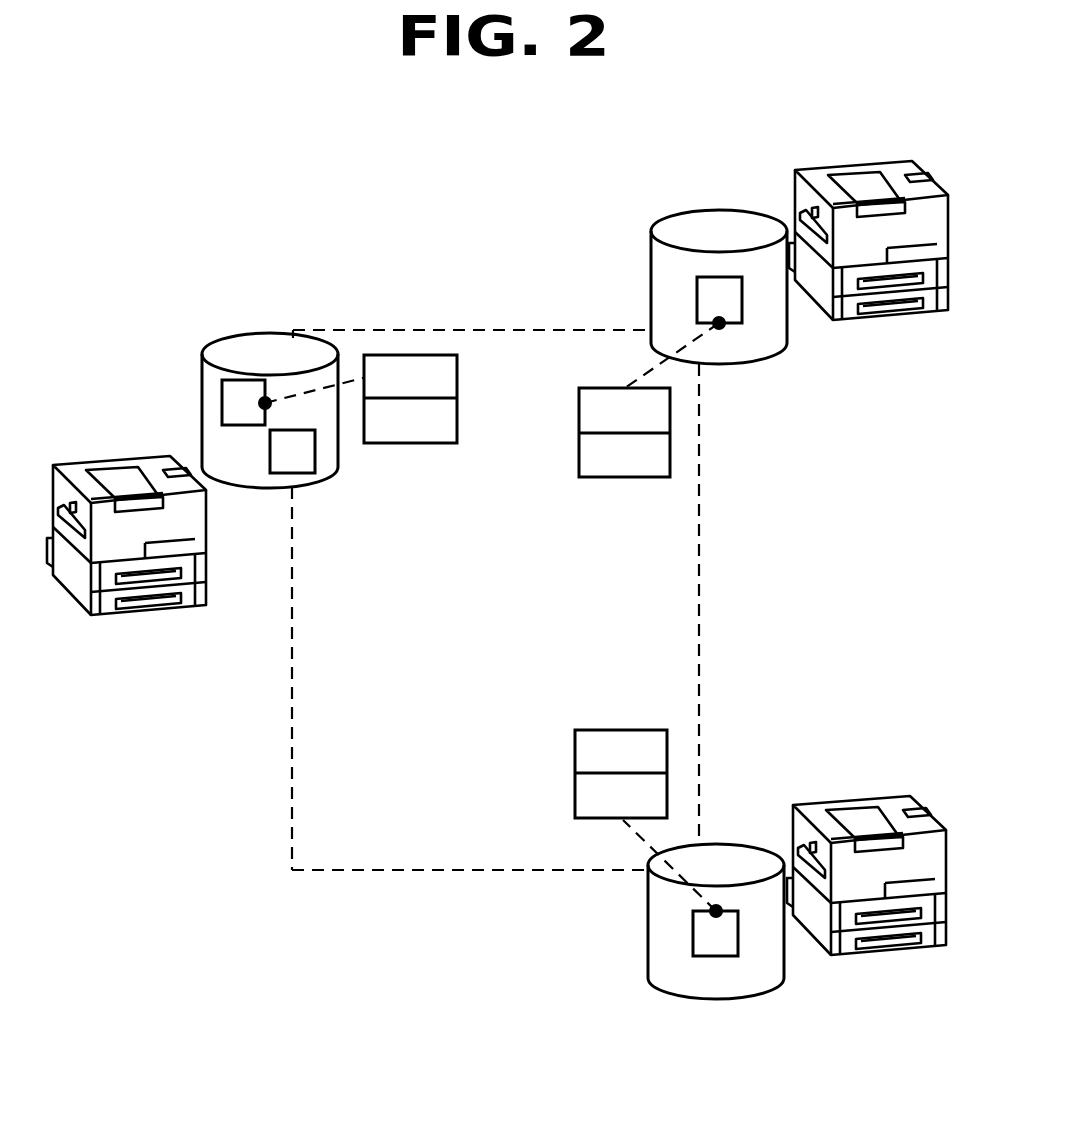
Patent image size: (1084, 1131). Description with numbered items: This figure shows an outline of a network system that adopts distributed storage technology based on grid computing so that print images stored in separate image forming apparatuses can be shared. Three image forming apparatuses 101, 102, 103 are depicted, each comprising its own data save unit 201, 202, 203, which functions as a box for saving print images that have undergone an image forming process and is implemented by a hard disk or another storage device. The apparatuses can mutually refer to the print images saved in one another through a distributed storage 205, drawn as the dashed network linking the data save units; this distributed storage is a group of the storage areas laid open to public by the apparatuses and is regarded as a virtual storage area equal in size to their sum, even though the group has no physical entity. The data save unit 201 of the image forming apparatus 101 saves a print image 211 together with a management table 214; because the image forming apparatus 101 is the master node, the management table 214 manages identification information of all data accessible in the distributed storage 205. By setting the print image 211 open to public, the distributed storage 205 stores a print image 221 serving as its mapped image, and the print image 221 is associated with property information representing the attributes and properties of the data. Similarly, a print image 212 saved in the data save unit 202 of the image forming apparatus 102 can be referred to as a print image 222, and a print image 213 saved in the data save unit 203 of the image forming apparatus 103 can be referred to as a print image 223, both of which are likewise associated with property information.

The image forming apparatus 101 is at (112, 612).
The image forming apparatus 102 is at (920, 313).
The image forming apparatus 103 is at (918, 947).
The data save unit 201 is at (218, 333).
The data save unit 202 is at (667, 213).
The data save unit 203 is at (755, 998).
The distributed storage 205 is at (290, 827).
The print image 211 is at (222, 405).
The print image 212 is at (697, 297).
The print image 213 is at (693, 930).
The management table 214 is at (290, 473).
The print image 221 is at (405, 355).
The print image 222 is at (670, 433).
The print image 223 is at (667, 773).